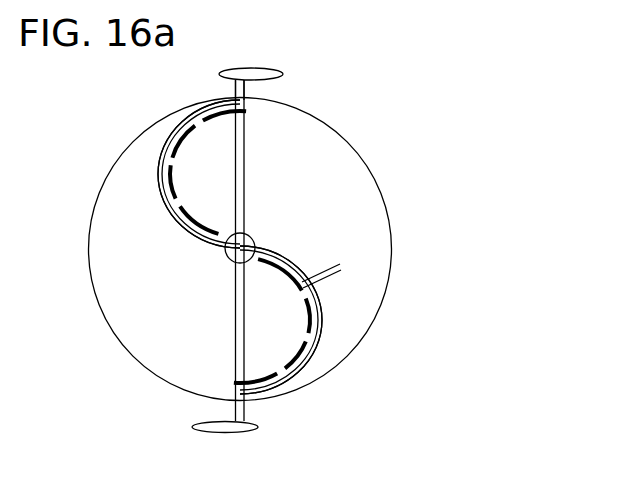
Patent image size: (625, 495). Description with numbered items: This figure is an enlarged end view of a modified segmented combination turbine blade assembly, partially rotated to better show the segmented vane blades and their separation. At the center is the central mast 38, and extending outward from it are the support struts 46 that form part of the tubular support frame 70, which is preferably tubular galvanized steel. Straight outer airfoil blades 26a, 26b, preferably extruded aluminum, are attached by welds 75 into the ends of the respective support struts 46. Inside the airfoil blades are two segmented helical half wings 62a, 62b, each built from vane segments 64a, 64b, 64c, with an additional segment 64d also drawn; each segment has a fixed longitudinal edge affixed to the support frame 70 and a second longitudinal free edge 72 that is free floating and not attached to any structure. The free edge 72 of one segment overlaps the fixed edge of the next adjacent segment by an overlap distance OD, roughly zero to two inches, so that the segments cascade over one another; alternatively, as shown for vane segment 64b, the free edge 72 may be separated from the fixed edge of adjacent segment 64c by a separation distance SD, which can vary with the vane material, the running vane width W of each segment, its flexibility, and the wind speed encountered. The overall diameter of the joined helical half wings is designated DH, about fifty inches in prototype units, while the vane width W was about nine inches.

The airfoil blade 26a is at (250, 71).
The airfoil blade 26b is at (240, 434).
The support strut 46 is at (247, 90).
The weld 75 is at (231, 82).
The segmented helical half wing 62a is at (153, 147).
The segmented helical half wing 62b is at (327, 349).
The tubular support frame 70 is at (160, 168).
The vane segment 64a is at (224, 110).
The vane segment 64b is at (184, 138).
The vane segment 64c is at (173, 183).
The blade segment 64d is at (222, 290).
The free edge 72 is at (302, 287).
The central mast 38 is at (254, 245).
The vane width W is at (203, 263).
The separation distance SD is at (297, 412).
The overlap distance OD is at (315, 250).
The diameter of joined helical half wings DH is at (350, 96).